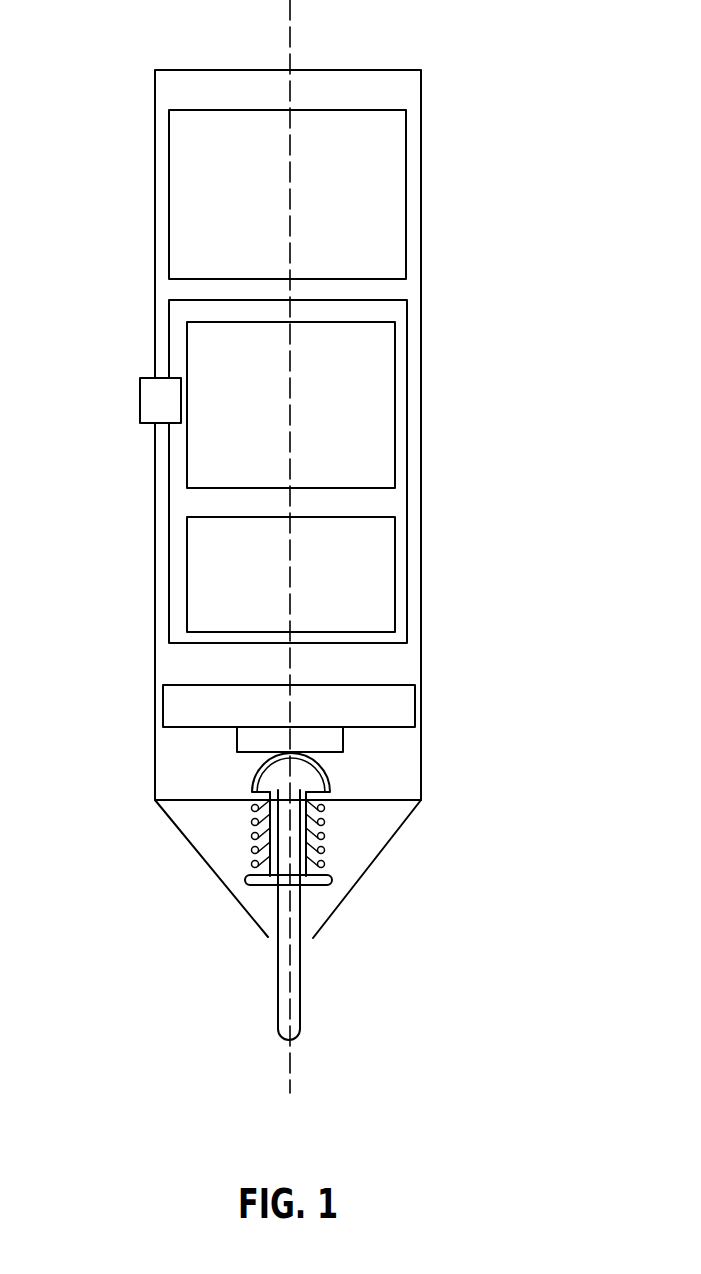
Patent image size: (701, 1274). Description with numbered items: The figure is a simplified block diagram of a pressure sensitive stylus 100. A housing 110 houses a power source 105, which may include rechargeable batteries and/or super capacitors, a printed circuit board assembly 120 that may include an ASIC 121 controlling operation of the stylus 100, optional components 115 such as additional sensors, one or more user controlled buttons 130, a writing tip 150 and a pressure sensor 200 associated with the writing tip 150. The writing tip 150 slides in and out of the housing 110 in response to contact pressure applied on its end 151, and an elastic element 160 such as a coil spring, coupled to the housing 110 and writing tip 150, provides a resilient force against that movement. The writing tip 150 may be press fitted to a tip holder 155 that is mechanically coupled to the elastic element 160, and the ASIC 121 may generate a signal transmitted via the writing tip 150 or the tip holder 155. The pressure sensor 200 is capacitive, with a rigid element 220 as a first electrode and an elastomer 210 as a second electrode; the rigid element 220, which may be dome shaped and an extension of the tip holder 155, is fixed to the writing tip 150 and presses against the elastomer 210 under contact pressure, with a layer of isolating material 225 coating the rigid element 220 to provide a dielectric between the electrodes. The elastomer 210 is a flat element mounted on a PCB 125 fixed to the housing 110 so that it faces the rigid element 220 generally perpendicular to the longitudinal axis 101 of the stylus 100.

The stylus 100 is at (97, 107).
The longitudinal axis 101 is at (290, 1088).
The power source 105 is at (168, 228).
The housing 110 is at (155, 603).
The optional components 115 is at (395, 583).
The printed circuit board assembly 120 is at (169, 358).
The ASIC 121 is at (395, 448).
The printed circuit board 125 is at (393, 730).
The user controlled button 130 is at (140, 410).
The writing tip 150 is at (277, 965).
The end 151 is at (286, 1048).
The tip holder 155 is at (325, 885).
The elastic element 160 is at (250, 840).
The pressure sensor 200 is at (238, 768).
The elastomer 210 is at (237, 742).
The rigid element 220 is at (306, 795).
The layer of isolating material 225 is at (329, 789).